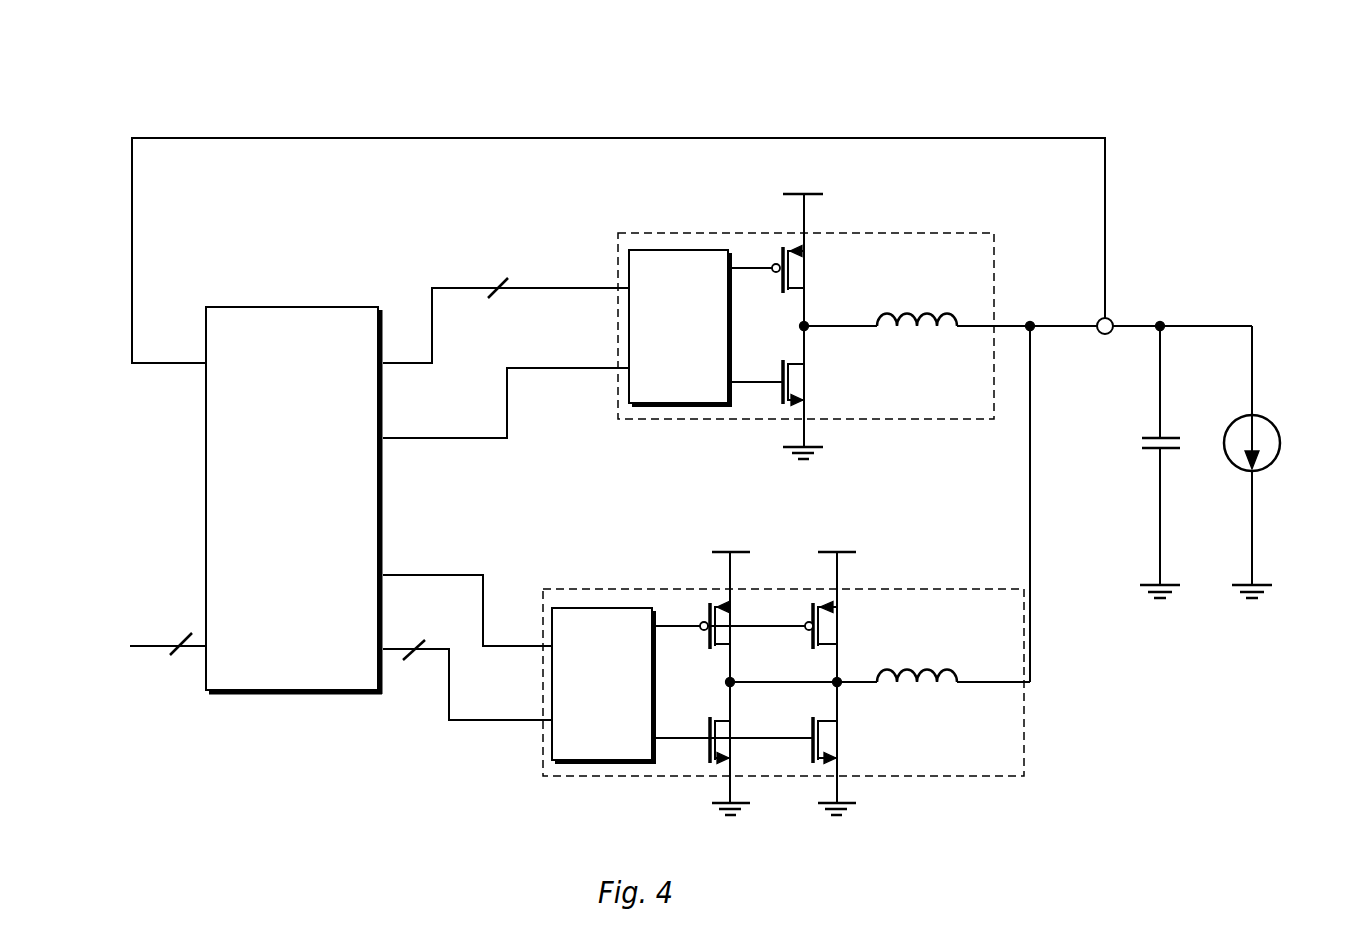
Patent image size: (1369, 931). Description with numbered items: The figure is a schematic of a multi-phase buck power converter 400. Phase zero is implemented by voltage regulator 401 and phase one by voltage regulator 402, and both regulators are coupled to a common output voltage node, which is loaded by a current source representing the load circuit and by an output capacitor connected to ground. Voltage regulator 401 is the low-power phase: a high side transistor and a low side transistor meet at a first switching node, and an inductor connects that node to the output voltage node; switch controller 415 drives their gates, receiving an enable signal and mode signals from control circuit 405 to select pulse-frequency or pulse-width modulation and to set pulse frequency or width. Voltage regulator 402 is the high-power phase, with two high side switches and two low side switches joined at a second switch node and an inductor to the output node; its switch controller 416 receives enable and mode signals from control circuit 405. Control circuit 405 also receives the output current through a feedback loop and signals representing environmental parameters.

The power converter 400 is at (713, 47).
The voltage regulator 401 is at (806, 313).
The voltage regulator 402 is at (786, 669).
The control circuit 405 is at (307, 536).
The switch controller 415 is at (695, 361).
The switch controller 416 is at (617, 719).